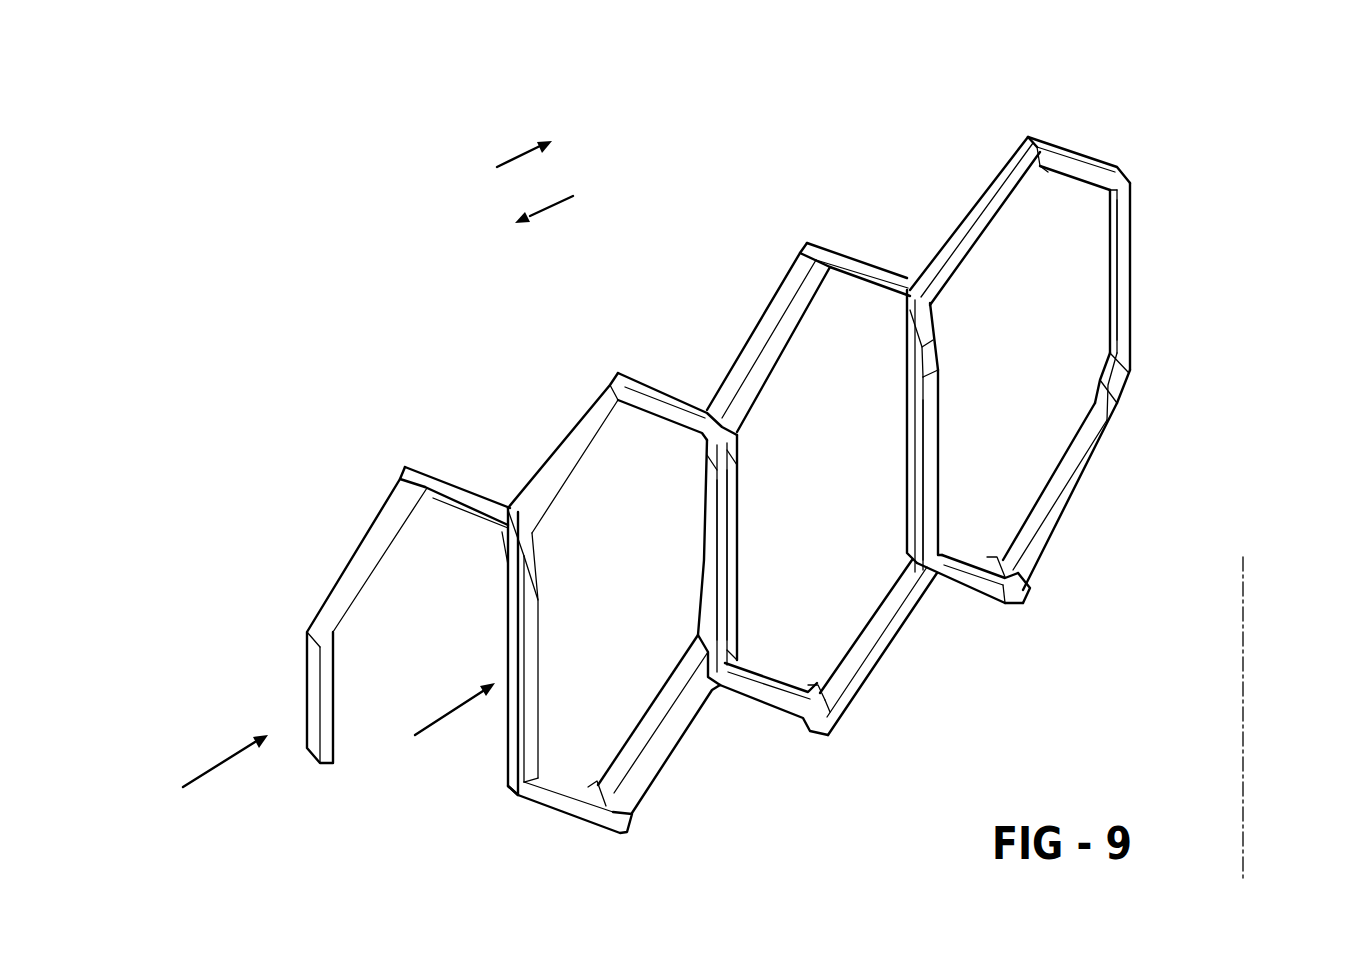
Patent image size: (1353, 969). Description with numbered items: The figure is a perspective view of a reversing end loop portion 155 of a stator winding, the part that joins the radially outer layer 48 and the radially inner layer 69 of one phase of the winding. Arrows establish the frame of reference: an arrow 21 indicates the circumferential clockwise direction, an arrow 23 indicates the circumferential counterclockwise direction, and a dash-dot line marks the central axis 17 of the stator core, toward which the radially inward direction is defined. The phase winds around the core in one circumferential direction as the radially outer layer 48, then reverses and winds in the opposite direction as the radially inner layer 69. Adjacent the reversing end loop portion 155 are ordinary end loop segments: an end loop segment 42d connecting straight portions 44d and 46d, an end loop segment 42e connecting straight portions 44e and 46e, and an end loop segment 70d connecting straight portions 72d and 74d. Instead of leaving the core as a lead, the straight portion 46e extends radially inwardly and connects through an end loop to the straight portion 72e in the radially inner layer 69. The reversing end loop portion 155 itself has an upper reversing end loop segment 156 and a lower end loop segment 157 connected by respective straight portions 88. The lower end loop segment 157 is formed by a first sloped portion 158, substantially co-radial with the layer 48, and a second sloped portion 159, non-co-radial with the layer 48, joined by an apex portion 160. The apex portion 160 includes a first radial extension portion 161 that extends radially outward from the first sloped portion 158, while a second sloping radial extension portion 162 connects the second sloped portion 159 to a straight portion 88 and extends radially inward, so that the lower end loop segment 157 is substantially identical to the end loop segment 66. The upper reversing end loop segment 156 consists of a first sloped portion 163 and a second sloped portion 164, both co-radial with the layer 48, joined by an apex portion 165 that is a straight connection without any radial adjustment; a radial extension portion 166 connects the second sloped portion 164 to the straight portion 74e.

The central axis 17 is at (1247, 663).
The arrow 21 is at (512, 157).
The arrow 23 is at (556, 208).
The end loop segment 42d is at (390, 462).
The end loop segment 42e is at (782, 251).
The straight portion 44d is at (327, 663).
The straight portion 44e is at (708, 455).
The straight portion 46d is at (510, 615).
The first straight portion 46e is at (910, 398).
The radially outer layer 48 is at (232, 762).
The end loop segment 66 is at (634, 827).
The radially inner layer 69 is at (452, 714).
The end loop segment 70d is at (605, 385).
The straight portion 72d is at (737, 450).
The straight portion 72e is at (1127, 195).
The straight portion 74d is at (535, 615).
The straight portion 74e is at (935, 405).
The straight portions 88 is at (1127, 282).
The reversing end loop portion 155 is at (1031, 132).
The upper reversing end loop segment 156 is at (1000, 152).
The lower end loop segment 157 is at (1036, 606).
The first sloped portion 158 is at (953, 588).
The second sloped portion 159 is at (1083, 472).
The apex portion 160 is at (1036, 583).
The first radial extension portion 161 is at (1007, 602).
The second sloping radial extension portion 162 is at (1127, 383).
The first sloped portion 163 is at (1073, 155).
The second sloped portion 164 is at (967, 227).
The apex portion 165 is at (1037, 160).
The radial extension portion 166 is at (930, 350).